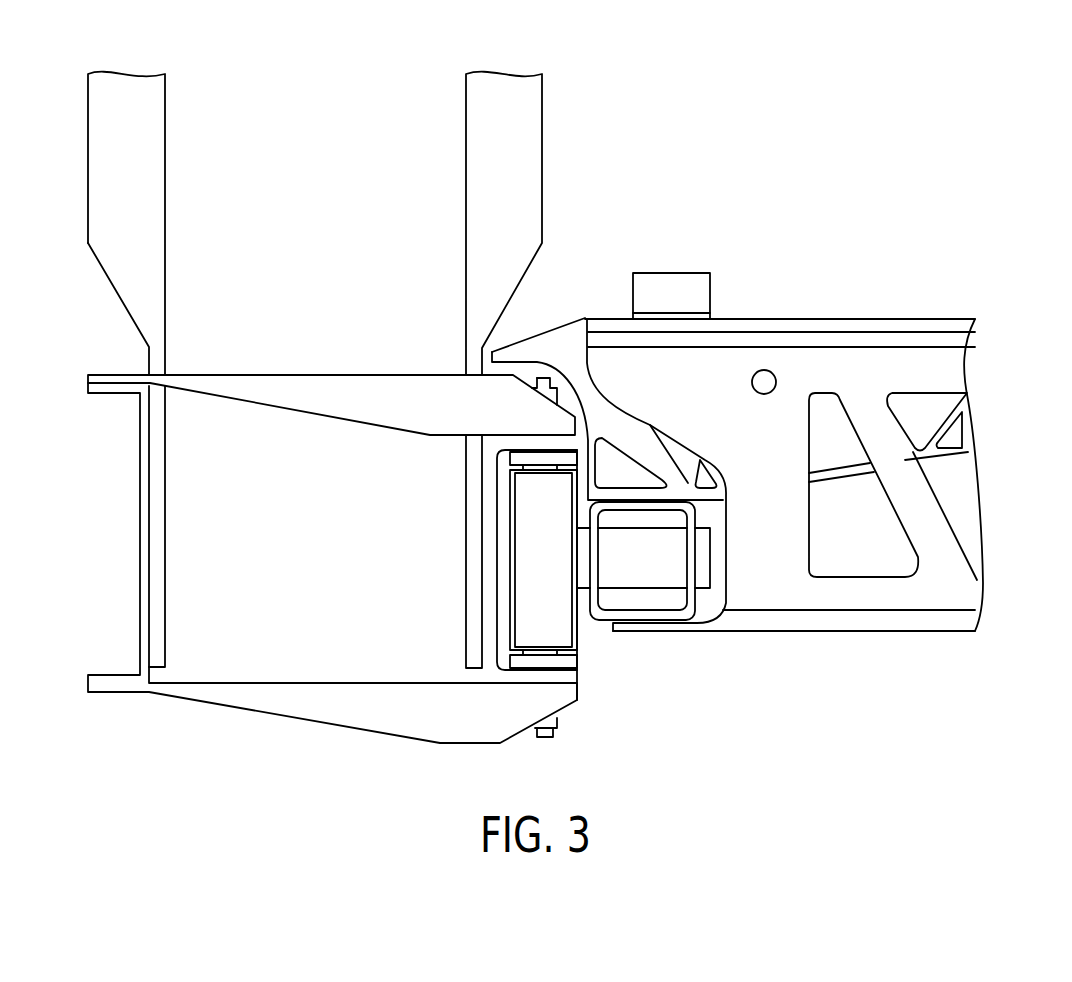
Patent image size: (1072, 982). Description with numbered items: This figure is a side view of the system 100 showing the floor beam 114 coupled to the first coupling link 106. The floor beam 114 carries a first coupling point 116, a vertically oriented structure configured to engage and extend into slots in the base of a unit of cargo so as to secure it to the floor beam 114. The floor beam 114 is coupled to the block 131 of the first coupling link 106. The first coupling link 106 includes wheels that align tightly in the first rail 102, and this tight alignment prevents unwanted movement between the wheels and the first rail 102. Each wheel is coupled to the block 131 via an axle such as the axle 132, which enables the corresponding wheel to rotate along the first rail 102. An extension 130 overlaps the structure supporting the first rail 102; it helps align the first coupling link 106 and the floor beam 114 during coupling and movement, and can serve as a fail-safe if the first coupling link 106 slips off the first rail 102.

The system 100 is at (822, 217).
The first rail 102 is at (557, 670).
The first coupling link 106 is at (578, 638).
The floor beam 114 is at (893, 320).
The first coupling point 116 is at (682, 272).
The extension 130 is at (535, 335).
The block 131 is at (652, 610).
The axle 132 is at (707, 570).